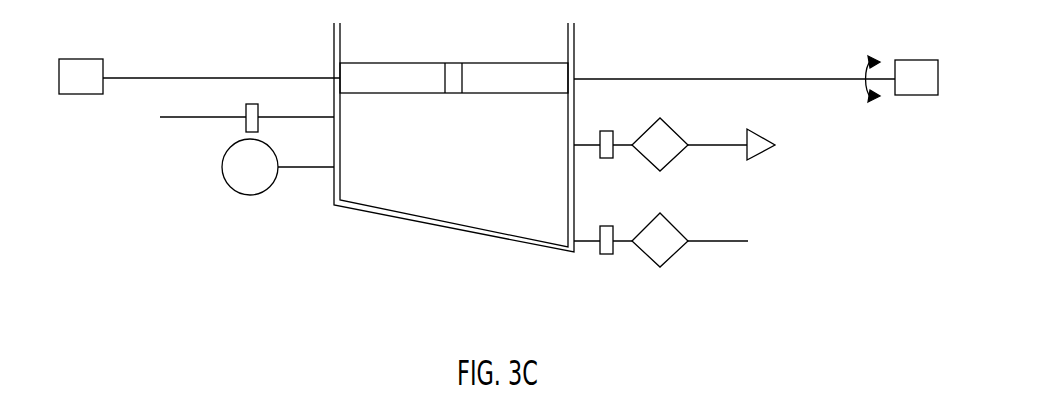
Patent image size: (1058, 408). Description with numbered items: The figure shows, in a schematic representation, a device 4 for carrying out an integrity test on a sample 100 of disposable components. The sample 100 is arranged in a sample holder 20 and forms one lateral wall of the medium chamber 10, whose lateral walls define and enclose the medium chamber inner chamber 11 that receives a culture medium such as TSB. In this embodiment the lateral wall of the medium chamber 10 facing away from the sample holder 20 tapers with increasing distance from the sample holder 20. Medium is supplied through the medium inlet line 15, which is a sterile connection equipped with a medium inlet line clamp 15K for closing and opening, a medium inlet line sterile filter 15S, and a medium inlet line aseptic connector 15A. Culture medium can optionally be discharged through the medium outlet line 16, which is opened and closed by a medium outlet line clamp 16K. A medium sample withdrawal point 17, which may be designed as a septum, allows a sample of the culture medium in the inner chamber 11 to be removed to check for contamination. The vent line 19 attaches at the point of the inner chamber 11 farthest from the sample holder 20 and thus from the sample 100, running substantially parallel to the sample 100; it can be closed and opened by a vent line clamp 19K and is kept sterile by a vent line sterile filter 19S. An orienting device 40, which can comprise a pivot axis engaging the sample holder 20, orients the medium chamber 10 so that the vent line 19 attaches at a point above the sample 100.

The device 4 is at (848, 300).
The medium chamber 10 is at (412, 220).
The medium chamber inner chamber 11 is at (466, 163).
The medium inlet line 15 is at (720, 148).
The medium inlet line aseptic connector 15A is at (773, 135).
The medium inlet line clamp 15K is at (607, 162).
The medium inlet line sterile filter 15S is at (669, 136).
The medium outlet line 16 is at (203, 118).
The medium outlet line clamp 16K is at (272, 110).
The medium sample withdrawal point 17 is at (257, 195).
The vent line 19 is at (720, 244).
The vent line clamp 19K is at (607, 257).
The vent line sterile filter 19S is at (669, 232).
The sample holder 20 is at (330, 70).
The orienting device 40 is at (930, 88).
The sample 100 is at (576, 72).